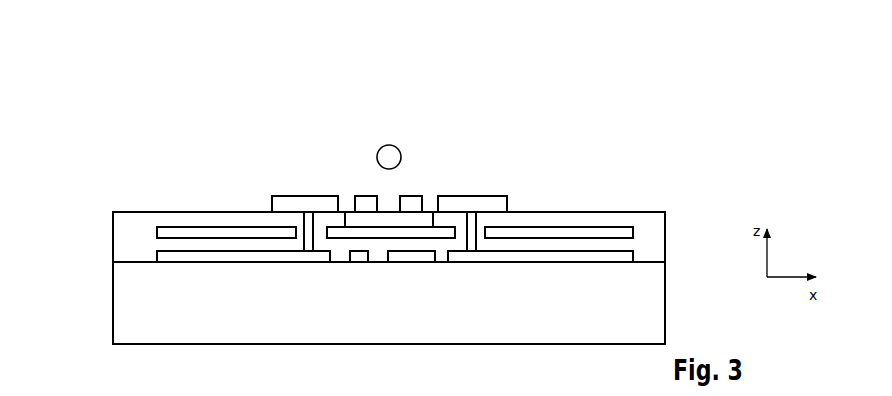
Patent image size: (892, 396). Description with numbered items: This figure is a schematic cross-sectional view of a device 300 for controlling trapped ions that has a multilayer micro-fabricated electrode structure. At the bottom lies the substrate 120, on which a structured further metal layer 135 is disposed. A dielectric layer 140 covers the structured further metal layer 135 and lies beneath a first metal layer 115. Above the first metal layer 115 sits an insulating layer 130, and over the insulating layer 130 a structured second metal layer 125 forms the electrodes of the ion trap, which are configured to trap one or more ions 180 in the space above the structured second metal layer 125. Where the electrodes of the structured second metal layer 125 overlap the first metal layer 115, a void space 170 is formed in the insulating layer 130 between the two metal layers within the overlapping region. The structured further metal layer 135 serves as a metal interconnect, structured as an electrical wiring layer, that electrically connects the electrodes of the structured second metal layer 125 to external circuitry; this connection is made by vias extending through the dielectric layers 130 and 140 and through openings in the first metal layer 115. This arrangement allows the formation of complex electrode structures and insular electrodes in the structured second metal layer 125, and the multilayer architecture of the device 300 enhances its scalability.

The substrate 120 is at (127, 280).
The insulating layer 130 is at (163, 219).
The first metal layer 115 is at (206, 232).
The structured second metal layer 125 is at (353, 200).
The structured further metal layer 135 is at (267, 258).
The dielectric layer 140 is at (217, 251).
The void space 170 is at (388, 218).
The ion 180 is at (381, 155).
The device for controlling trapped ions 300 is at (623, 144).